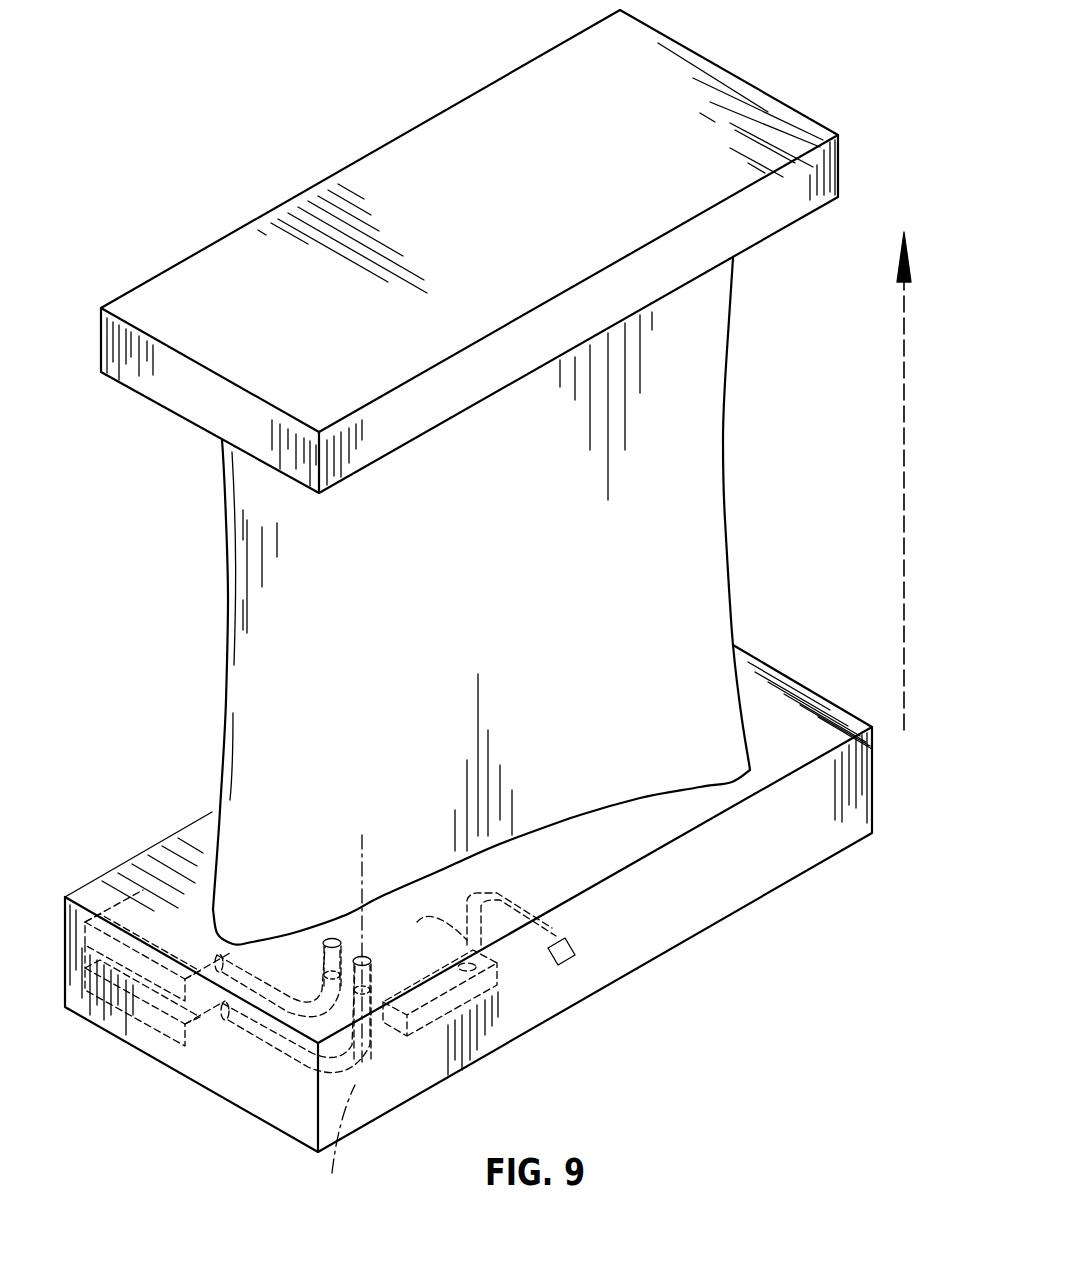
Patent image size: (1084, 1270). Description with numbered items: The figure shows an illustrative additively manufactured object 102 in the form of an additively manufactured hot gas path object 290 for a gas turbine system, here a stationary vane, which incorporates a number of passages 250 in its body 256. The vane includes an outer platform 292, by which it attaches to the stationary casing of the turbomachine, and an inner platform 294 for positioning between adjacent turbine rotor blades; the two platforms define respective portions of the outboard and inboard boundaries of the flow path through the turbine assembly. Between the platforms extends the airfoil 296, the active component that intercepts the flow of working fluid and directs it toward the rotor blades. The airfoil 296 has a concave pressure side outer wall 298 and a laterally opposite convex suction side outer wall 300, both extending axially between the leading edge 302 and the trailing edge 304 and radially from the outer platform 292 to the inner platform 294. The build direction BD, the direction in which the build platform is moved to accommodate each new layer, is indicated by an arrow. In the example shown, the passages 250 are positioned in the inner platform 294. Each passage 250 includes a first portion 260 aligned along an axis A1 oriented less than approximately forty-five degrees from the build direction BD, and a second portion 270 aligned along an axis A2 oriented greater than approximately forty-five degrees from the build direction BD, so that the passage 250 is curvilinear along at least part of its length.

The object 102 is at (198, 606).
The additively manufactured hot gas path object 290 is at (469, 603).
The outer platform 292 is at (813, 175).
The inner platform 294 is at (848, 773).
The airfoil 296 is at (533, 512).
The pressure side outer wall 298 is at (638, 597).
The suction side outer wall 300 is at (282, 665).
The leading edge 302 is at (223, 738).
The trailing edge 304 is at (725, 493).
The body 256 is at (738, 874).
The passage 250 is at (230, 985).
The first portion 260 is at (343, 940).
The second portion 270 is at (262, 985).
The axis A1 is at (362, 892).
The axis A2 is at (338, 1141).
The build direction BD is at (905, 425).